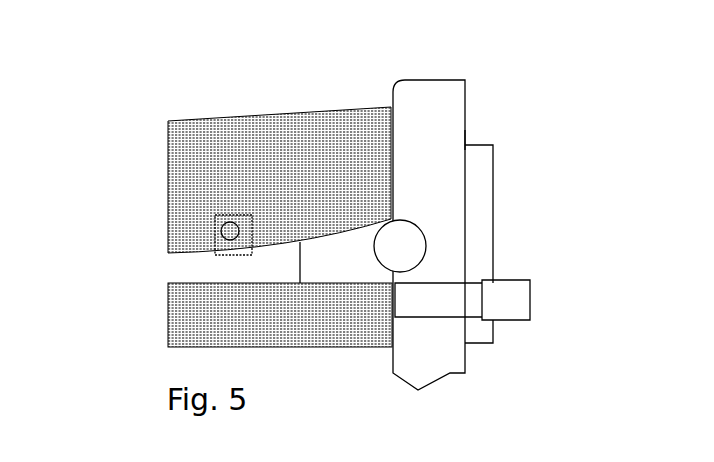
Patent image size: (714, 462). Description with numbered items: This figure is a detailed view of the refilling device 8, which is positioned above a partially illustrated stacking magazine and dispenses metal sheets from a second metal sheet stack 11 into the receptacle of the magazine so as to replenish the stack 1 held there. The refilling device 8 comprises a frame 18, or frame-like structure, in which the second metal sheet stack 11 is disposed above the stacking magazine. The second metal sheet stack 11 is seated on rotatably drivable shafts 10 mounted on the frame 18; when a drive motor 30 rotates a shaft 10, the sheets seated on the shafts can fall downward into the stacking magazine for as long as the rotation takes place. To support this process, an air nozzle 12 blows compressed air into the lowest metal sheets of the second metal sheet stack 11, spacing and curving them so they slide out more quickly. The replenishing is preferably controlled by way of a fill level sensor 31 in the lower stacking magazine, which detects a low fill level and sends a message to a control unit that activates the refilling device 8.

The stack 1 is at (278, 323).
The refilling device 8 is at (467, 100).
The rotatably drivable shaft 10 is at (400, 246).
The second metal sheet stack 11 is at (263, 147).
The air nozzle 12 is at (228, 232).
The frame 18 is at (456, 140).
The drive motor 30 is at (478, 240).
The fill level sensor 31 is at (470, 305).